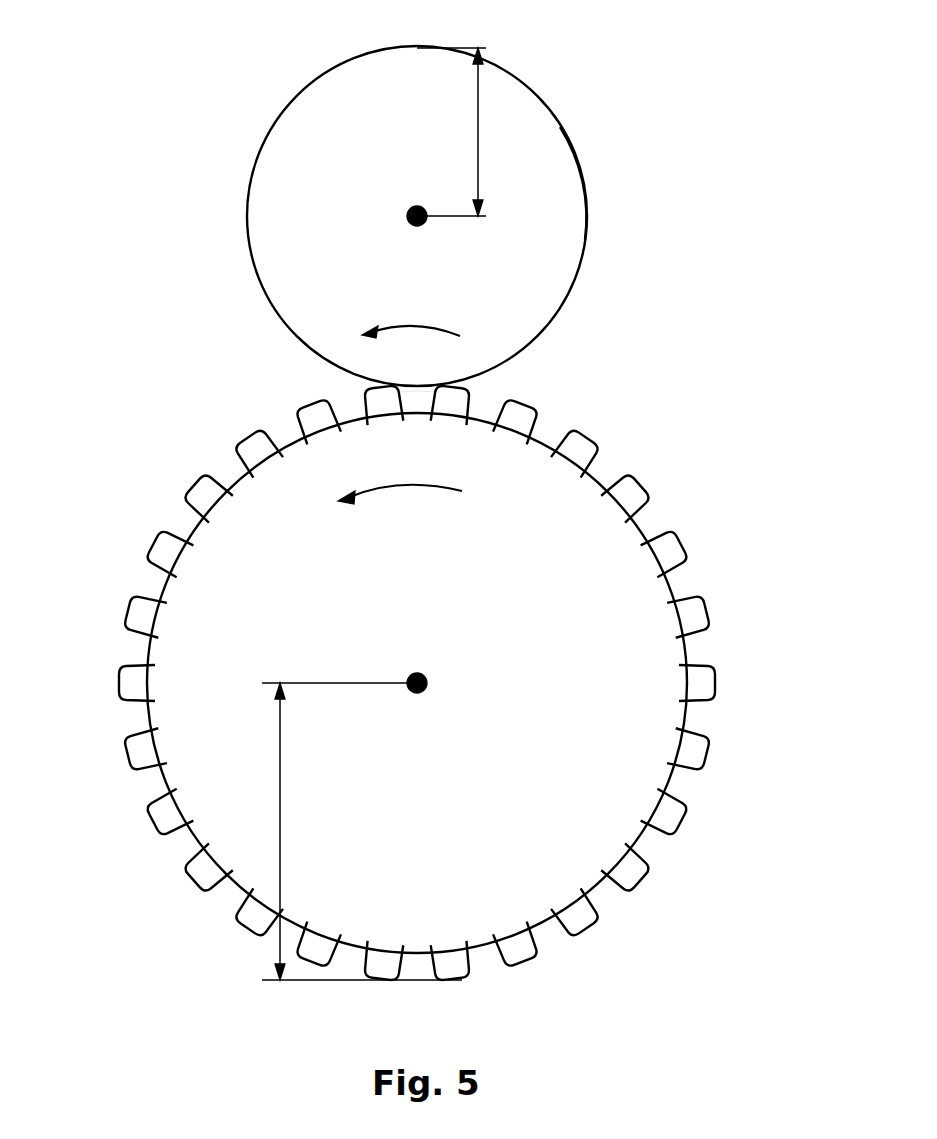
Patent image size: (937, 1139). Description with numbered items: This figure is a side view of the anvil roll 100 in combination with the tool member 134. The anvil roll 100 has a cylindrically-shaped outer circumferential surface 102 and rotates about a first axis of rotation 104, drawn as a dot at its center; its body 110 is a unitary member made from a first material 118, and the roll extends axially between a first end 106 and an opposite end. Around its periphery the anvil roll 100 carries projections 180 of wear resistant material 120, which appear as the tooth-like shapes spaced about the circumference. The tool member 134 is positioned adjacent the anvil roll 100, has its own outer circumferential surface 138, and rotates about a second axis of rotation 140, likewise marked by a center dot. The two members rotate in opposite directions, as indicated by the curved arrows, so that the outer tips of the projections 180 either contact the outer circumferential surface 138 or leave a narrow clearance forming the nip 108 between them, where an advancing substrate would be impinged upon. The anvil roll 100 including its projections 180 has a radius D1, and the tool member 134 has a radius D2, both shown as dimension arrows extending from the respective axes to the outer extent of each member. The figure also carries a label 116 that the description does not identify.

The anvil roll 100 is at (429, 691).
The outer circumferential surface 102 is at (688, 792).
The first axis of rotation 104 is at (428, 692).
The first end 106 is at (250, 740).
The nip 108 is at (476, 383).
The body 110 is at (172, 630).
The tooth root 116 is at (675, 588).
The first material 118 is at (200, 598).
The wear resistant material 120 is at (253, 449).
The tool member 134 is at (292, 171).
The outer circumferential surface 138 is at (562, 125).
The second axis of rotation 140 is at (409, 208).
The protrusions 180 is at (717, 684).
The radius D1 is at (282, 876).
The radius D2 is at (480, 95).